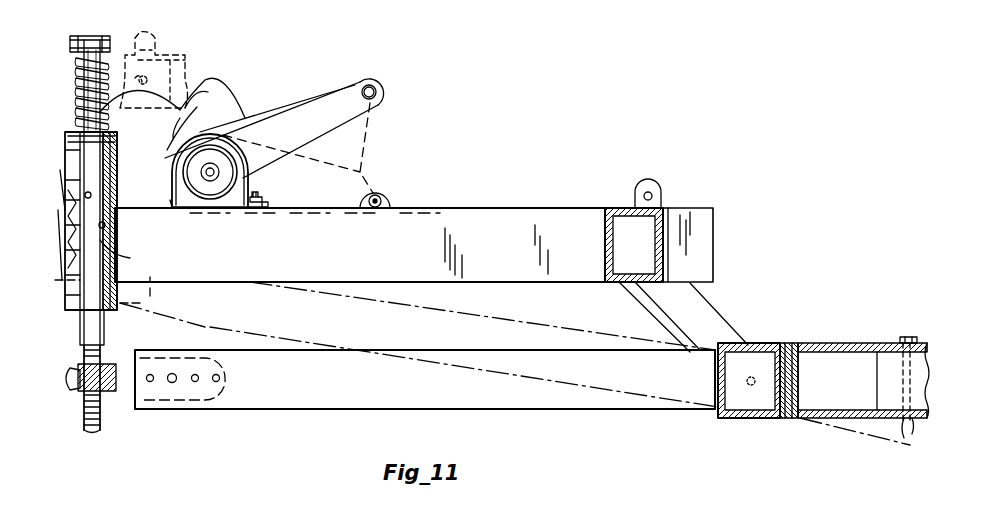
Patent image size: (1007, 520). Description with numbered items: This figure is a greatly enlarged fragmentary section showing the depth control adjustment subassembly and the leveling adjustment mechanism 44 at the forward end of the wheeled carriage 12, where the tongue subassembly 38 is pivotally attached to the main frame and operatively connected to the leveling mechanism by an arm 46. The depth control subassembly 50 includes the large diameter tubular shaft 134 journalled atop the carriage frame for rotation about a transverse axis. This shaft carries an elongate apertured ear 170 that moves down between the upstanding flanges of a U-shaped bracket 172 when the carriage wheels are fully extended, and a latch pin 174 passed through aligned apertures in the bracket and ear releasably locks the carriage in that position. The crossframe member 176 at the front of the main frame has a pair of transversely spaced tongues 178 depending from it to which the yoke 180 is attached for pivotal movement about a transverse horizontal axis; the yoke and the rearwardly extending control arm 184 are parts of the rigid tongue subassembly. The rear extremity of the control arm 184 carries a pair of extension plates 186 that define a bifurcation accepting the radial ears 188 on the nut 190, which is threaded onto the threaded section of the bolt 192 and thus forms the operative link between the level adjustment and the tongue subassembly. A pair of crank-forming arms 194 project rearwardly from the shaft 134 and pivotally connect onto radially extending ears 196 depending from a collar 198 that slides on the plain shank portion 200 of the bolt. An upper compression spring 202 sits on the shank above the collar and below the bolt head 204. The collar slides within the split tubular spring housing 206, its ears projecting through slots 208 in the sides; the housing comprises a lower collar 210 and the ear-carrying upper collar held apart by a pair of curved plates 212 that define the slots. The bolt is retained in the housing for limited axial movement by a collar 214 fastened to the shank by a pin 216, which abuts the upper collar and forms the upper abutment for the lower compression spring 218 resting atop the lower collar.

The wheeled carriage 12 is at (523, 190).
The tongue subassembly 38 is at (800, 335).
The leveling adjustment mechanism 44 is at (165, 50).
The arm 46 is at (528, 405).
The depth control subassembly 50 is at (290, 98).
The tubular shaft 134 is at (225, 135).
The apertured ear 170 is at (376, 100).
The U-shaped bracket 172 is at (385, 198).
The latch pin 174 is at (382, 194).
The crossframe member 176 is at (695, 225).
The tongues 178 is at (708, 316).
The yoke 180 is at (850, 345).
The control arm 184 is at (330, 395).
The extension plates 186 is at (170, 418).
The radial ears 188 is at (72, 405).
The nut 190 is at (80, 325).
The bolt 192 is at (100, 428).
The crank-forming arms 194 is at (183, 80).
The radially extending ears 196 is at (219, 170).
The collar 198 is at (60, 140).
The plain shank portion 200 is at (92, 40).
The upper compression spring 202 is at (192, 87).
The head 204 is at (84, 34).
The spring housing 206 is at (98, 165).
The slots 208 is at (107, 138).
The lower collar 210 is at (120, 292).
The curved plates 212 is at (95, 228).
The collar 214 is at (95, 200).
The pin 216 is at (160, 178).
The lower compression spring 218 is at (150, 256).